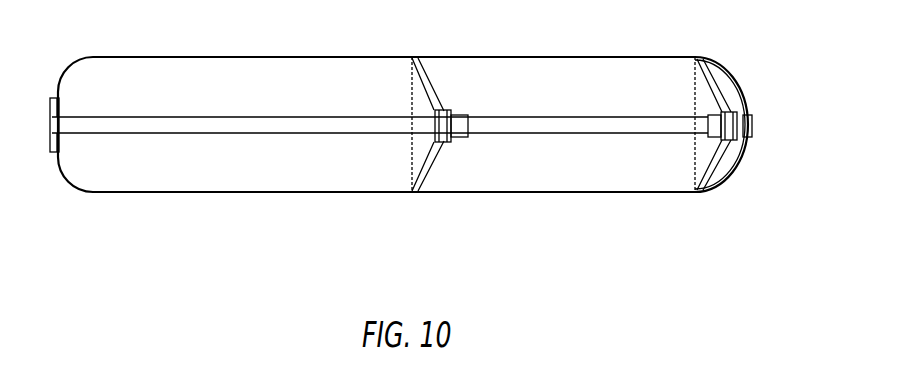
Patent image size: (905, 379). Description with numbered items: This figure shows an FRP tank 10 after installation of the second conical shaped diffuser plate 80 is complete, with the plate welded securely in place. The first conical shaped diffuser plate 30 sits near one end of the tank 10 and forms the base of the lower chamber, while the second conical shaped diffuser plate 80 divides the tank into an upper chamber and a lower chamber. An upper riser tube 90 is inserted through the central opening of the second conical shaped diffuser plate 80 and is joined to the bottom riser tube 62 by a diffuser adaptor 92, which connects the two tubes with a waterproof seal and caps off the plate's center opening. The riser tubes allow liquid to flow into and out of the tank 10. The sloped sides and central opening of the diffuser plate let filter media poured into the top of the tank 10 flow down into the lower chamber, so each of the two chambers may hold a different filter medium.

The tank 10 is at (173, 194).
The first conical shaped diffuser plate 30 is at (719, 87).
The bottom riser tube 62 is at (629, 136).
The second conical shaped diffuser plate 80 is at (415, 191).
The upper riser tube 90 is at (305, 116).
The diffuser adaptor 92 is at (469, 108).